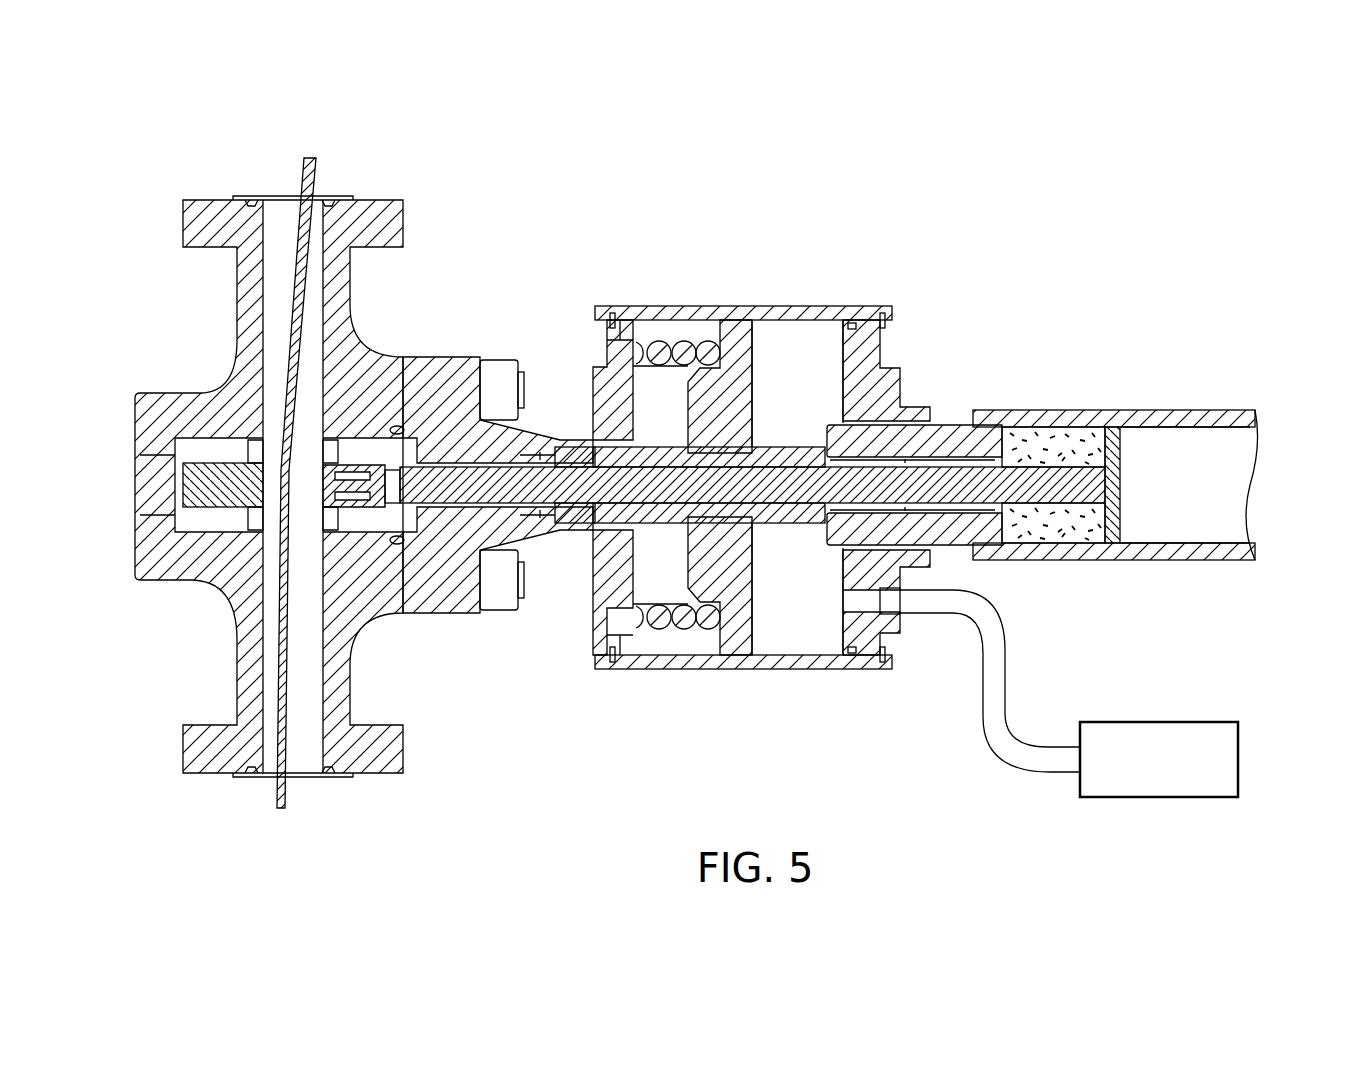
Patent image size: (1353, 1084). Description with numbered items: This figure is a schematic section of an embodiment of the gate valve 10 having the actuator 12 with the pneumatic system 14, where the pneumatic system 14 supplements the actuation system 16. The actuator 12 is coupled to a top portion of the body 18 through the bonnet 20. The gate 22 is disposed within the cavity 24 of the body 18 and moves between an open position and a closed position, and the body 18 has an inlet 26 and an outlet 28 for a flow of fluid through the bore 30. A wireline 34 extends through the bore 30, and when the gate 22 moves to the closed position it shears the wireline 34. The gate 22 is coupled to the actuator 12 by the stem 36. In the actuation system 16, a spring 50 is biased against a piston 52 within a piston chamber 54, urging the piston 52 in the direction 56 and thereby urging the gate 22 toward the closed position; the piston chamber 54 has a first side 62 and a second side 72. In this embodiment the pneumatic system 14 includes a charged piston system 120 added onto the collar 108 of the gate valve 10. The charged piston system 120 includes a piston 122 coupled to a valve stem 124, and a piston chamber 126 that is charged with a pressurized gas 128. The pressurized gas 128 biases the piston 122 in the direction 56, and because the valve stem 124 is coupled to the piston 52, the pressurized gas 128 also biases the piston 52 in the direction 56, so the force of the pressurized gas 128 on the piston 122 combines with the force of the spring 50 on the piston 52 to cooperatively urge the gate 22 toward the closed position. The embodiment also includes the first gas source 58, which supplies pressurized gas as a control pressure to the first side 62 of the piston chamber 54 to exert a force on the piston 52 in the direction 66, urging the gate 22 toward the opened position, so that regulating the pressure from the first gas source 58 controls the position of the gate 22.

The gate valve 10 is at (838, 168).
The actuator 12 is at (1043, 213).
The pneumatic system 14 is at (1253, 345).
The actuation system 16 is at (665, 705).
The body 18 is at (365, 372).
The bonnet 20 is at (452, 380).
The gate 22 is at (195, 472).
The cavity 24 is at (220, 455).
The inlet 26 is at (273, 200).
The outlet 28 is at (300, 782).
The bore 30 is at (293, 195).
The wireline 34 is at (313, 178).
The stem 36 is at (447, 490).
The spring 50 is at (651, 350).
The piston 52 is at (735, 622).
The piston chamber 54 is at (780, 342).
The direction 56 is at (830, 372).
The first gas source 58 is at (1160, 722).
The first side 62 is at (805, 625).
The direction 66 is at (770, 572).
The second side 72 is at (697, 330).
The collar 108 is at (975, 447).
The charged piston system 120 is at (1172, 410).
The piston 122 is at (1118, 490).
The valve stem 124 is at (1000, 487).
The piston chamber 126 is at (1055, 445).
The pressurized gas 128 is at (1085, 540).